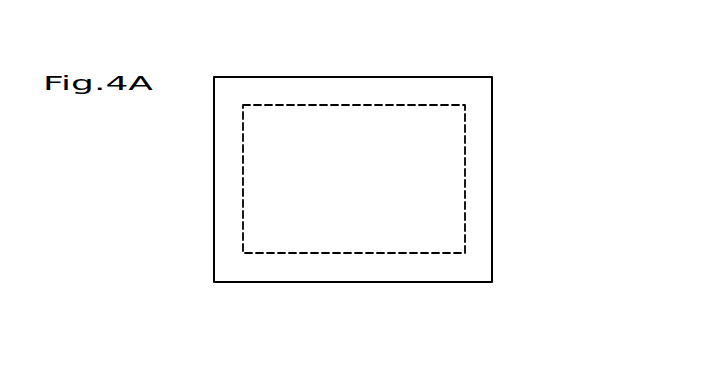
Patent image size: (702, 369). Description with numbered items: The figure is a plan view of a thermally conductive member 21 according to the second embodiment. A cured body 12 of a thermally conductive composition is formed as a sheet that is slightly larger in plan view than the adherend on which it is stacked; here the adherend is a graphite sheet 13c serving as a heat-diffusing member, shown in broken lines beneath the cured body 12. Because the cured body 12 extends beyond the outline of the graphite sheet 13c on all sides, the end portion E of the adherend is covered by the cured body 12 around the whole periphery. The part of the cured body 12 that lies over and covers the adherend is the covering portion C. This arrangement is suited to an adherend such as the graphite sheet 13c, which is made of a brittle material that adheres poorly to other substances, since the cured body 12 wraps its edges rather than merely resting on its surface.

The thermally conductive member 21 is at (522, 105).
The graphite sheet 13c is at (292, 105).
The cured body 12 is at (260, 283).
The covering portion C is at (408, 105).
The end portion E is at (441, 105).